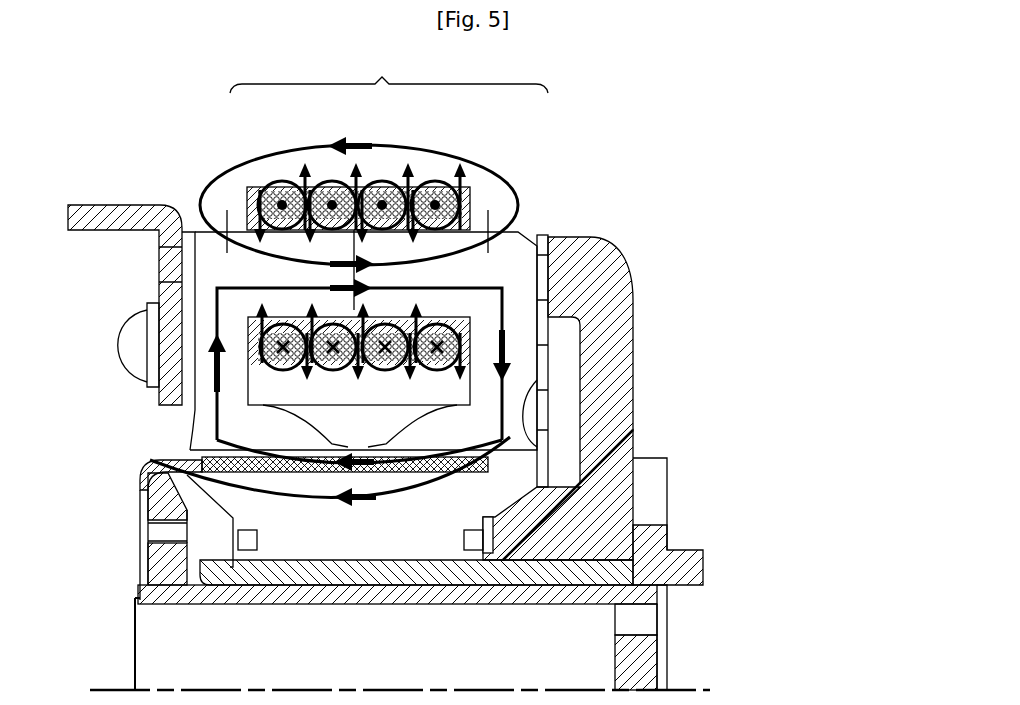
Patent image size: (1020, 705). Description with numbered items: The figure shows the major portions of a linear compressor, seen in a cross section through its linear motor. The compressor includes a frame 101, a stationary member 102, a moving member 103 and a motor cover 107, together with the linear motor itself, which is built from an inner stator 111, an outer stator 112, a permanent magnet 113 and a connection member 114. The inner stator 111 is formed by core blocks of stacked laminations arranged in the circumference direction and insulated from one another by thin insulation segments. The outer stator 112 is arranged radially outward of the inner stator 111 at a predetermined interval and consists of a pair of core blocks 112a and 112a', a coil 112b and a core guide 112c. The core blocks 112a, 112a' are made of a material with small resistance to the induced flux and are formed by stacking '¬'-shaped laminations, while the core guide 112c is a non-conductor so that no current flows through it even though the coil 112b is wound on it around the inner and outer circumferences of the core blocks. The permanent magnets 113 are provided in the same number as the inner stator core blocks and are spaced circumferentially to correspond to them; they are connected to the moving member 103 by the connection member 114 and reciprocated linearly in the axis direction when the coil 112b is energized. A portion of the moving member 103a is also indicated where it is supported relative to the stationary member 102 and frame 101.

The frame 101 is at (613, 302).
The stationary member 102 is at (640, 537).
The moving member 103 is at (676, 658).
The bearing portion of base 103a is at (642, 620).
The motor cover 107 is at (107, 212).
The inner stator 111 is at (273, 510).
The outer stator 112 is at (389, 228).
The core block 112a is at (369, 291).
The core block 112a' is at (239, 272).
The coil 112b is at (383, 203).
The core guide 112c is at (433, 200).
The permanent magnet 113 is at (272, 463).
The connection member 114 is at (153, 457).